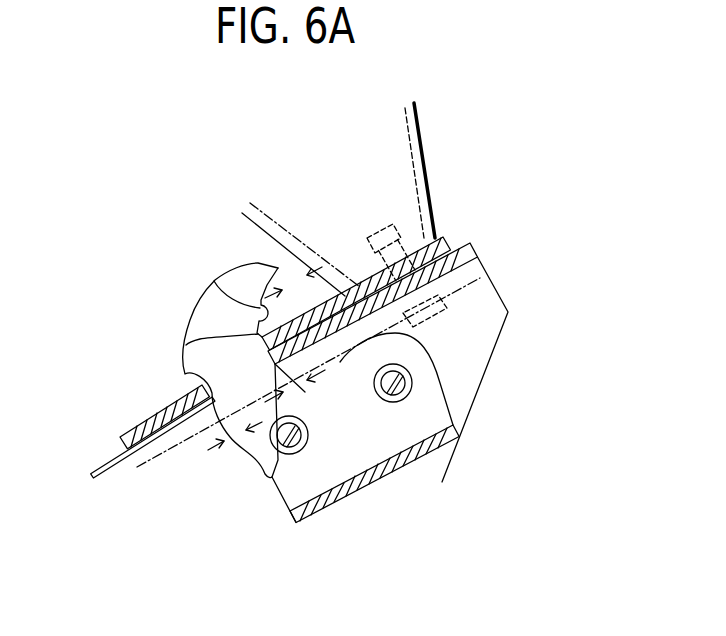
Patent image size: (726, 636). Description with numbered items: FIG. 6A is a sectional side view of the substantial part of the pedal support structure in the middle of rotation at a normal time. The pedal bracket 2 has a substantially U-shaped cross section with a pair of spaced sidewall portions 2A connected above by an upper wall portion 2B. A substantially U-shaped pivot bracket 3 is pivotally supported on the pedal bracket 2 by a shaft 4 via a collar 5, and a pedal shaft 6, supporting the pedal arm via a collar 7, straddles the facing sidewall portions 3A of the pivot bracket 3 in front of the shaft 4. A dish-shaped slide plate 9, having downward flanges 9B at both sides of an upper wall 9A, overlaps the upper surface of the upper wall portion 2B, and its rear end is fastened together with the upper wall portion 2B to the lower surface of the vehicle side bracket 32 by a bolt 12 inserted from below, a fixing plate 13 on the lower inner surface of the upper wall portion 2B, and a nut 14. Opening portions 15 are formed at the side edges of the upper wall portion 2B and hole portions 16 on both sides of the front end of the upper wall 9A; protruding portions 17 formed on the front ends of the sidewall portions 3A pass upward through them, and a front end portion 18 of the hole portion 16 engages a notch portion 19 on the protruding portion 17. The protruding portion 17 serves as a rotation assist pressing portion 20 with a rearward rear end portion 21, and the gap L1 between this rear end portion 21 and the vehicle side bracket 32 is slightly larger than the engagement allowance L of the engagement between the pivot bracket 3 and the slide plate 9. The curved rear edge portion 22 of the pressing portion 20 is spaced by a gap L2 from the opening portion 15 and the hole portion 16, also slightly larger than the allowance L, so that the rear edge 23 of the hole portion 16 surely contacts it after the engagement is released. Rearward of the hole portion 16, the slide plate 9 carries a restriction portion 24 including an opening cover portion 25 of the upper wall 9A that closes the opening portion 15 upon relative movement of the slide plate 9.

The pedal bracket 2 is at (357, 326).
The sidewall portions 2A is at (490, 328).
The upper wall portion 2B is at (455, 247).
The pivot bracket 3 is at (397, 438).
The sidewall portions 3A is at (452, 406).
The shaft 4 is at (376, 400).
The collar 5 is at (405, 405).
The pedal shaft 6 is at (286, 455).
The collar 7 is at (314, 503).
The slide plate 9 is at (127, 430).
The upper wall 9A is at (136, 434).
The flanges 9B is at (137, 467).
The bolt 12 is at (450, 294).
The fixing plate 13 is at (480, 250).
The nut 14 is at (398, 228).
The opening portions 15 is at (203, 420).
The hole portions 16 is at (184, 343).
The protruding portions 17 is at (191, 329).
The front end portion 18 is at (183, 358).
The notch portion 19 is at (183, 375).
The rotation assist pressing portion 20 is at (191, 329).
The rear end portion 21 is at (242, 268).
The rear edge portion 22 is at (210, 276).
The rear edge 23 is at (362, 352).
The restriction portion 24 is at (301, 230).
The opening cover portion 25 is at (332, 280).
The vehicle side bracket 32 is at (421, 150).
The engagement allowance L is at (236, 452).
The gap L1 is at (293, 292).
The gap L2 is at (295, 398).